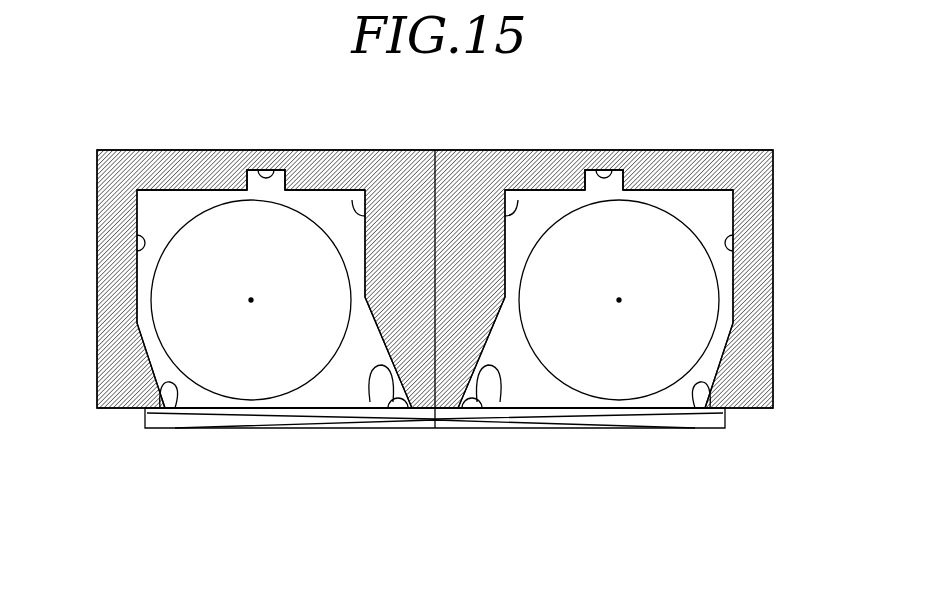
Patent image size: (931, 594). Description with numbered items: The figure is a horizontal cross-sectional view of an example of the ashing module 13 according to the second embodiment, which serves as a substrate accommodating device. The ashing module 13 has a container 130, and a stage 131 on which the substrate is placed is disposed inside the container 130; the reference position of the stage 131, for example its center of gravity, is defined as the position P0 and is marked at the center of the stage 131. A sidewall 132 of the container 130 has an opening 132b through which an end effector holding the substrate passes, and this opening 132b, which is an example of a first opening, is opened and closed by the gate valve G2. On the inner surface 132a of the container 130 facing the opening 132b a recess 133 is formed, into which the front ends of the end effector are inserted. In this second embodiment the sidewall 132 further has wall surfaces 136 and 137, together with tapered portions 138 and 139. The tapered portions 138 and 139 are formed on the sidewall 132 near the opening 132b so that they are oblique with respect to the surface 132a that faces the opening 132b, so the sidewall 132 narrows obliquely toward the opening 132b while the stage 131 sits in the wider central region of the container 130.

The ashing module 13 is at (124, 150).
The container 130 is at (97, 378).
The stage 131 is at (150, 300).
The sidewall 132 is at (158, 196).
The inner surface 132a is at (158, 190).
The opening 132b is at (460, 430).
The recess 133 is at (266, 170).
The wall surface 136 is at (135, 243).
The wall surface 137 is at (352, 200).
The tapered portion 138 is at (170, 410).
The tapered portion 139 is at (385, 412).
The gate valve G2 is at (240, 430).
The position P0 is at (253, 303).